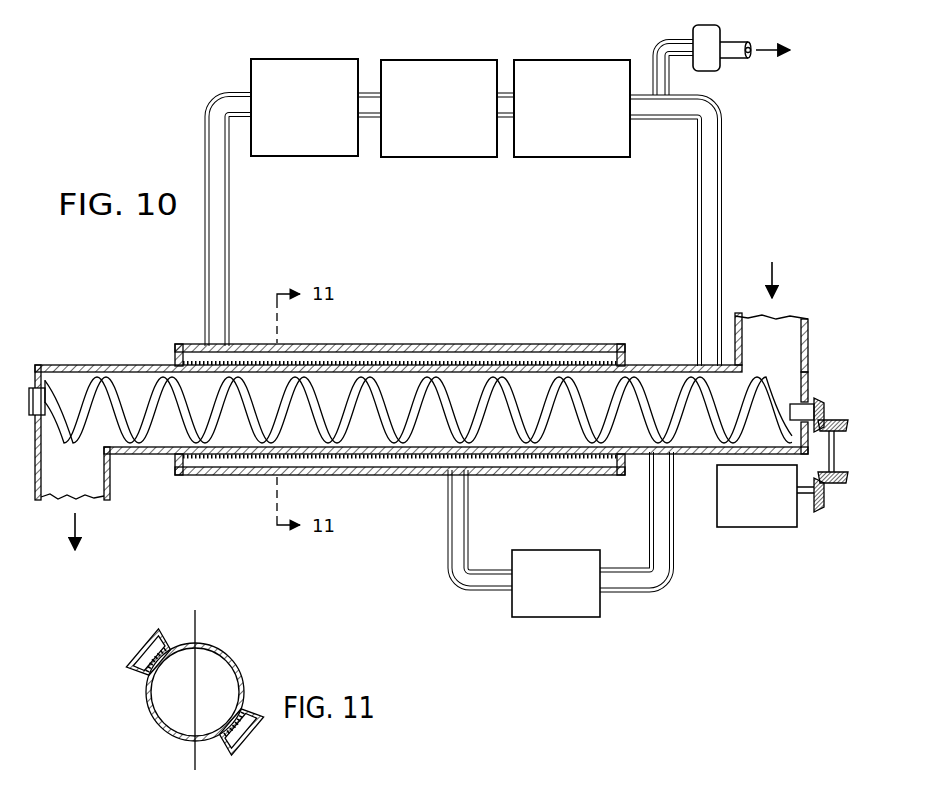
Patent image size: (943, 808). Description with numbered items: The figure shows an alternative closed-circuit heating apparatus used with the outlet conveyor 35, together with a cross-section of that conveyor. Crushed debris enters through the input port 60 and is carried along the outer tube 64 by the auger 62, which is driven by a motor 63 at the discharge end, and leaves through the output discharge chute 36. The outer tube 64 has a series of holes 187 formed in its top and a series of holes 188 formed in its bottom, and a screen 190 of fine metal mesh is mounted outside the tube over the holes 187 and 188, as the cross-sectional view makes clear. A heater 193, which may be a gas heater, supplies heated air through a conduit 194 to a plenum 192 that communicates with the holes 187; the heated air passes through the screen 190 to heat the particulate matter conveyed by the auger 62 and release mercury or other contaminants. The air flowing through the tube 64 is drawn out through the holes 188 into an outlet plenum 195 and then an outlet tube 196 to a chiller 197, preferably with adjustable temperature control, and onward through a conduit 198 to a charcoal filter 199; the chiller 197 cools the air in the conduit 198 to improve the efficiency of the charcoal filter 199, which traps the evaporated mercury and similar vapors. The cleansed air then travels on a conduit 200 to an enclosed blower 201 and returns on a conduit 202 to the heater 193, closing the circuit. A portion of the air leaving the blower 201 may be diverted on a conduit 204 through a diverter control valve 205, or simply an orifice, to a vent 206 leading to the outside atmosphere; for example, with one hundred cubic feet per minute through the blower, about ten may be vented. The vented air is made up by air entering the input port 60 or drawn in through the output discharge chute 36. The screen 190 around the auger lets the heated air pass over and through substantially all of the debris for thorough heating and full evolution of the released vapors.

In FIG. 10, the outlet conveyor 35 is at (125, 358).
In FIG. 10, the output discharge chute 36 is at (33, 460).
In FIG. 10, the input port 60 is at (805, 325).
In FIG. 10, the auger 62 is at (570, 395).
In FIG. 10, the motor 63 is at (748, 528).
In FIG. 10, the outer tube 64 is at (157, 362).
In FIG. 11, the outer tube 64 is at (235, 652).
In FIG. 11, the holes 187 is at (168, 668).
In FIG. 11, the holes 188 is at (233, 723).
In FIG. 10, the screen 190 is at (524, 362).
In FIG. 11, the screen 190 is at (158, 630).
In FIG. 10, the plenum 192 is at (577, 478).
In FIG. 11, the plenum 192 is at (247, 740).
In FIG. 10, the heater 193 is at (512, 606).
In FIG. 10, the conduit 194 is at (468, 540).
In FIG. 10, the outlet plenum 195 is at (447, 345).
In FIG. 11, the outlet plenum 195 is at (148, 643).
In FIG. 10, the outlet tube 196 is at (227, 225).
In FIG. 10, the chiller 197 is at (303, 65).
In FIG. 10, the conduit 198 is at (372, 118).
In FIG. 10, the charcoal filter 199 is at (410, 65).
In FIG. 10, the conduit 200 is at (505, 122).
In FIG. 10, the enclosed blower 201 is at (525, 62).
In FIG. 10, the conduit 202 is at (723, 200).
In FIG. 10, the conduit 204 is at (672, 78).
In FIG. 10, the diverter control valve 205 is at (693, 28).
In FIG. 10, the vent 206 is at (740, 38).